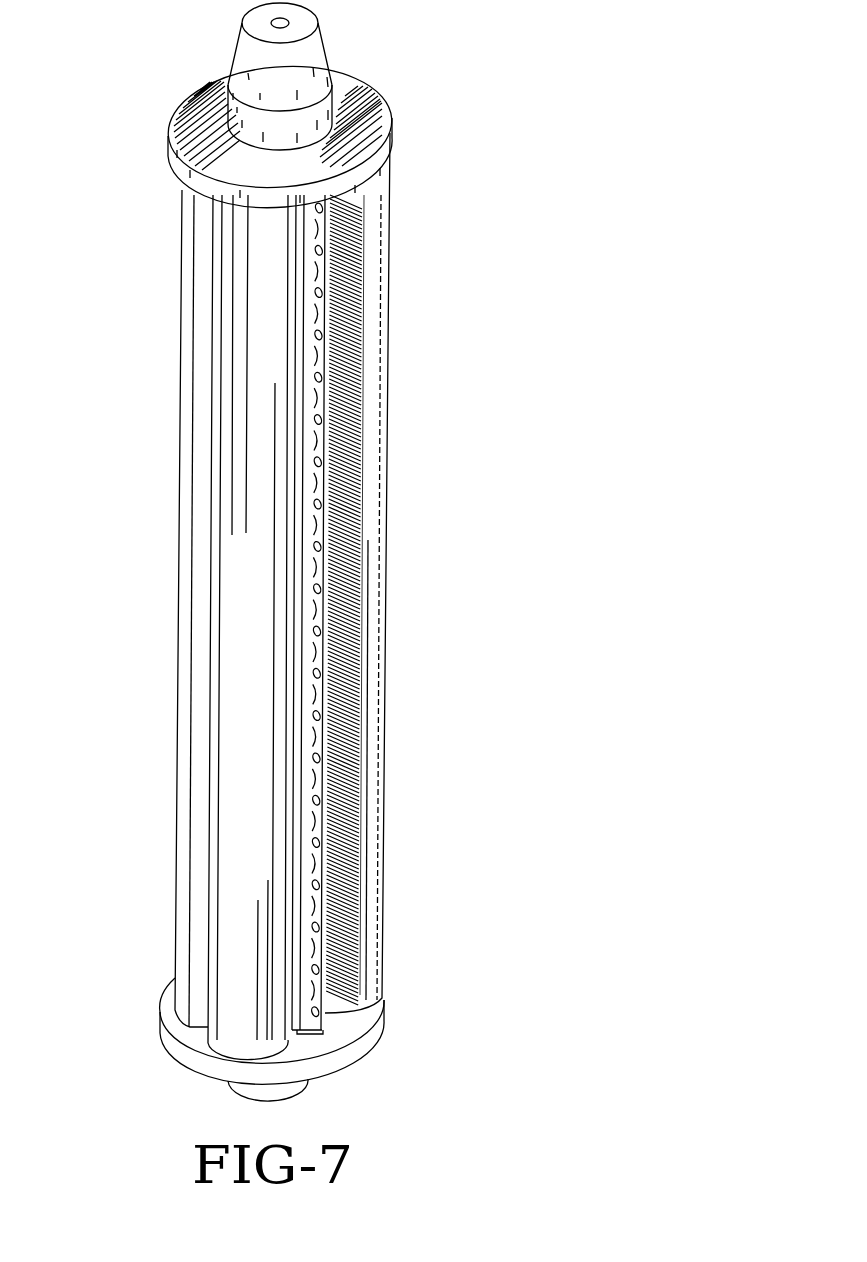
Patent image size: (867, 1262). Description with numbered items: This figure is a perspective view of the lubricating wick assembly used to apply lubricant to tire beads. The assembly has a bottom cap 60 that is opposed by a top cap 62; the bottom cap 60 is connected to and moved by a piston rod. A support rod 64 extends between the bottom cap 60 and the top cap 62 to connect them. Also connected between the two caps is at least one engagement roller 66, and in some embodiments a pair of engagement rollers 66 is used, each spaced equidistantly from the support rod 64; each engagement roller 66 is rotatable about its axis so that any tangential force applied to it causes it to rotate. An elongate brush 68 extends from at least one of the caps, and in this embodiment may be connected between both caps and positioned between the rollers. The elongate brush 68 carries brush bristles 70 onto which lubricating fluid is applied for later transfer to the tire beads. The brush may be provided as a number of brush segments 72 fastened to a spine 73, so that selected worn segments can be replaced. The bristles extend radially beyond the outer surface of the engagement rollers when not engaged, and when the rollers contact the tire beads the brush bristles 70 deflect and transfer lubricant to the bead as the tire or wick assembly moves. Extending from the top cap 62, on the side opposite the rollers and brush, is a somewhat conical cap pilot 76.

The bottom cap 60 is at (200, 1058).
The top cap 62 is at (378, 167).
The support rod 64 is at (200, 493).
The engagement roller 66 is at (265, 330).
The elongate brush 68 is at (368, 400).
The brush bristles 70 is at (360, 343).
The brush segments 72 is at (316, 228).
The spine 73 is at (300, 1028).
The cap pilot 76 is at (307, 60).